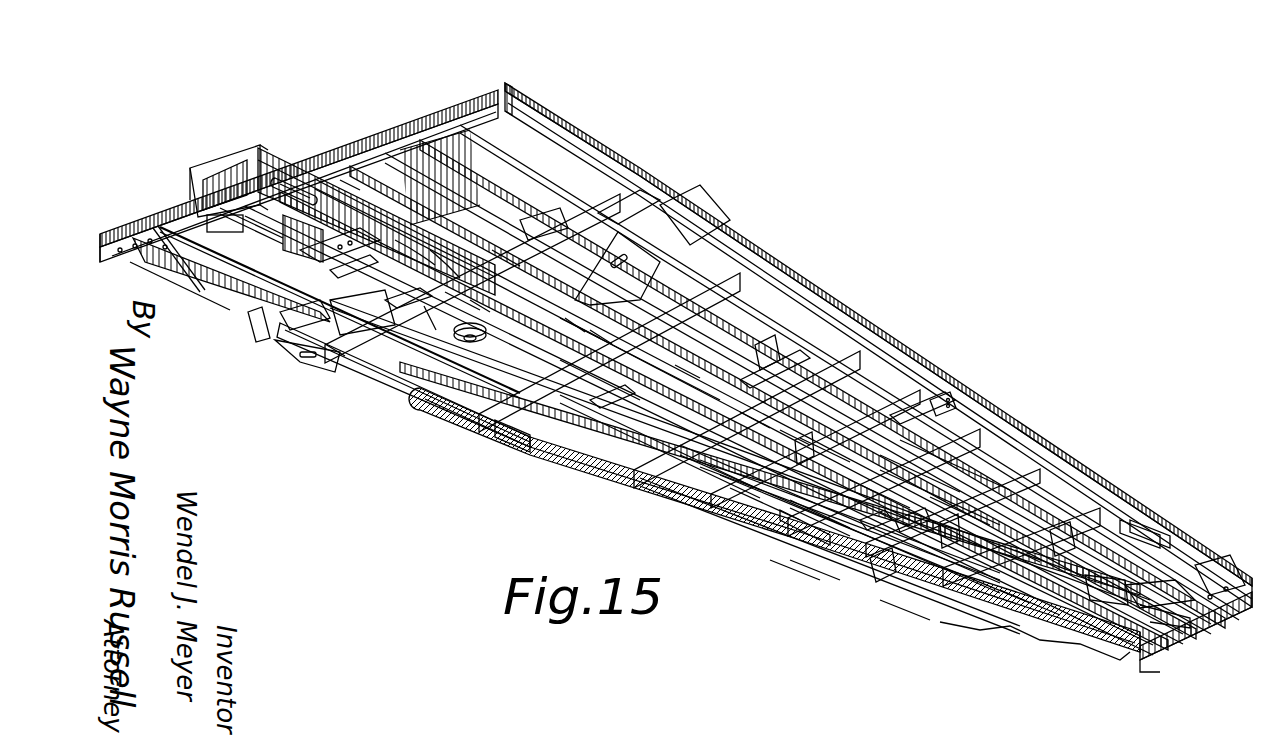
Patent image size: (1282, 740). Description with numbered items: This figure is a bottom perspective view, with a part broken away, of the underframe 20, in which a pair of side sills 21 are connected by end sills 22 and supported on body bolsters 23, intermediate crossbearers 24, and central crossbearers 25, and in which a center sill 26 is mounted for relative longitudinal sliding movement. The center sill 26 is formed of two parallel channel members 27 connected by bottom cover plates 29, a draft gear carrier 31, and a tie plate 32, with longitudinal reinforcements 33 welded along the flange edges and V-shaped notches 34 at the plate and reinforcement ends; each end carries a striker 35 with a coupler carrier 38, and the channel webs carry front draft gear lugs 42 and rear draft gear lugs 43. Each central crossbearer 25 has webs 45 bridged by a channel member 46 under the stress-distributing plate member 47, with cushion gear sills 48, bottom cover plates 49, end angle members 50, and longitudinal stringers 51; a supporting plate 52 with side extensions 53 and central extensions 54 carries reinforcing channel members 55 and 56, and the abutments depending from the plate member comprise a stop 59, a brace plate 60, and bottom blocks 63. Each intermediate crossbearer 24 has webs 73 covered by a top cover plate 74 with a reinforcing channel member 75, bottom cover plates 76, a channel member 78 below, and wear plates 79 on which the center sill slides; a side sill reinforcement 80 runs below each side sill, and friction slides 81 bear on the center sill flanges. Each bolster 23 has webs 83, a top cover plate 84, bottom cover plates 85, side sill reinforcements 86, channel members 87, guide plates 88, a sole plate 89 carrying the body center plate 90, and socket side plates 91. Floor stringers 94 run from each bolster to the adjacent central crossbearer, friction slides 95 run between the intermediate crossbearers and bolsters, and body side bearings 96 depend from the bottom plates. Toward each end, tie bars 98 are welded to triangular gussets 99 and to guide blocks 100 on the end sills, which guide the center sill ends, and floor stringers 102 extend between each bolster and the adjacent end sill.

The underframe 20 is at (876, 325).
The side sill 21 is at (797, 283).
The end sill 22 is at (425, 118).
The body bolster 23 is at (600, 210).
The intermediate crossbearer 24 is at (772, 404).
The central crossbearer 25 is at (950, 436).
The center sill 26 is at (604, 332).
The channel member 27 is at (285, 255).
The bottom cover plate 29 is at (600, 378).
The draft gear carrier 31 is at (340, 255).
The tie plate 32 is at (410, 307).
The longitudinal reinforcement 33 is at (460, 290).
The V-shaped notch 34 is at (420, 247).
The striker 35 is at (251, 147).
The coupler carrier 38 is at (225, 233).
The front draft gear lug 42 is at (282, 240).
The rear draft gear lug 43 is at (345, 280).
The web 45 is at (848, 453).
The channel member 46 is at (810, 436).
The stress-distributing plate member 47 is at (928, 470).
The cushion gear sill 48 is at (888, 496).
The bottom cover plate 49 is at (866, 455).
The angle member 50 is at (970, 410).
The longitudinal stringer 51 is at (975, 455).
The supporting plate 52 is at (912, 525).
The side extension 53 is at (804, 450).
The extension 54 is at (896, 515).
The reinforcing channel member 55 is at (762, 480).
The channel member 56 is at (797, 525).
The stop 59 is at (822, 511).
The brace plate 60 is at (882, 530).
The bottom block 63 is at (752, 500).
The web 73 is at (718, 388).
The top cover plate 74 is at (766, 358).
The reinforcing channel member 75 is at (682, 365).
The bottom cover plate 76 is at (516, 442).
The channel member 78 is at (660, 441).
The wear plate 79 is at (610, 415).
The side sill reinforcement 80 is at (1135, 525).
The friction slide 81 is at (752, 420).
The web 83 is at (359, 323).
The top cover plate 84 is at (540, 238).
The bottom cover plate 85 is at (610, 281).
The side sill reinforcement 86 is at (680, 222).
The channel member 87 is at (500, 258).
The guide plate 88 is at (478, 299).
The sole plate 89 is at (480, 333).
The body center plate 90 is at (486, 340).
The socket side plate 91 is at (430, 320).
The floor stringer 94 is at (690, 300).
The friction slide 95 is at (598, 338).
The body side bearing 96 is at (575, 325).
The tie bar 98 is at (352, 178).
The triangular gusset 99 is at (455, 268).
The guide block 100 is at (330, 167).
The floor stringer 102 is at (470, 193).